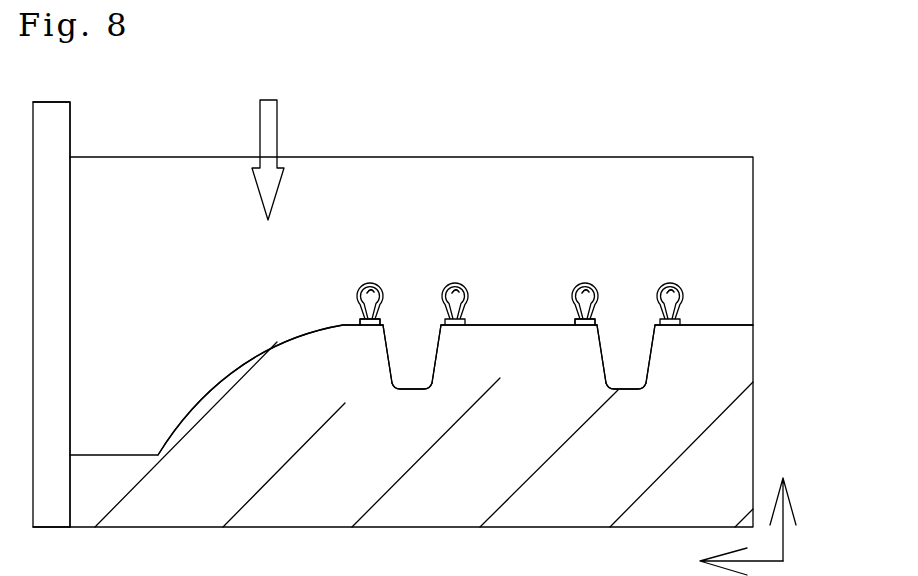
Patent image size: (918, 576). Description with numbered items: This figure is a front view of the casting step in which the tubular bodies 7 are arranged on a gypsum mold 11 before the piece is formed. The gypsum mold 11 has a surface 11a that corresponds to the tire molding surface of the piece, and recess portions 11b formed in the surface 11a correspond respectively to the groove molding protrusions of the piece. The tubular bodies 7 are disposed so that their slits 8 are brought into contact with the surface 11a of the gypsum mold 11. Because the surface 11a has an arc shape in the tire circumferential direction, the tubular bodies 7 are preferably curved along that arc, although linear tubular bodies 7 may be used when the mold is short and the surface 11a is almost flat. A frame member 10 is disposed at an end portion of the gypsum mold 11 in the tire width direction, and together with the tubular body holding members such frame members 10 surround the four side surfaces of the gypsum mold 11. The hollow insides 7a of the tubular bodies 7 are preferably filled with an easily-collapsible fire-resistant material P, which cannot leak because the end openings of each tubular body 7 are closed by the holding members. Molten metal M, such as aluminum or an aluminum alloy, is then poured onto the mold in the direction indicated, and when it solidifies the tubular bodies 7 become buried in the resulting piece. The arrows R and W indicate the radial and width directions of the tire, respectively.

The tubular body 7 is at (368, 282).
The hollow inside 7a is at (363, 310).
The slit 8 is at (372, 335).
The frame member 10 is at (55, 208).
The gypsum mold 11 is at (108, 455).
The surface of gypsum mold 11a is at (253, 350).
The recess portion 11b is at (407, 389).
The easily-collapsible fire-resistant material P is at (378, 288).
The molten metal M is at (268, 146).
The radial direction R is at (783, 507).
The width direction W is at (733, 561).